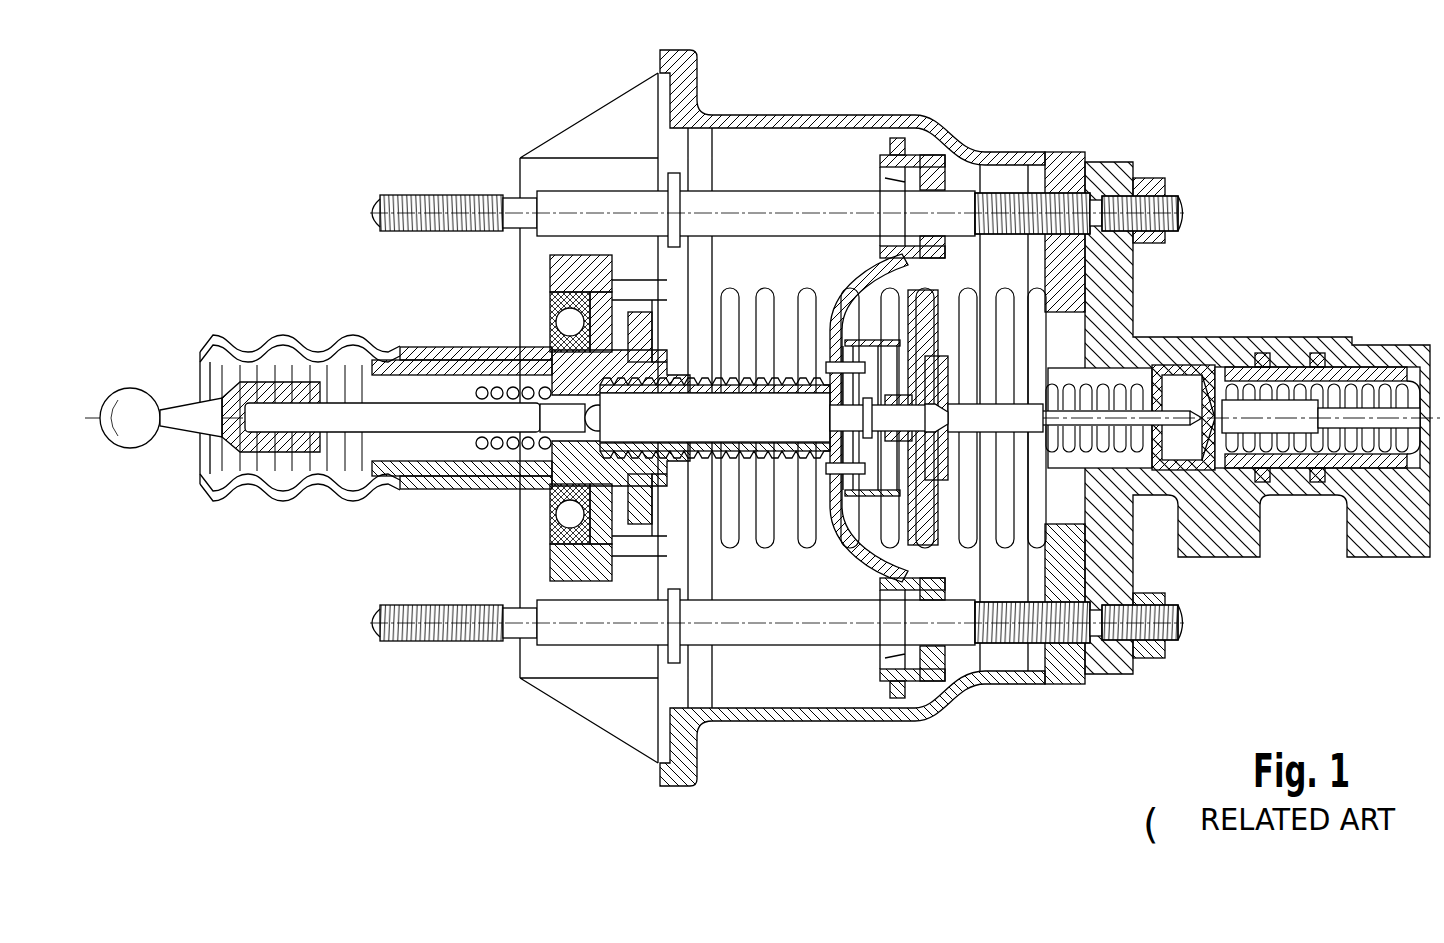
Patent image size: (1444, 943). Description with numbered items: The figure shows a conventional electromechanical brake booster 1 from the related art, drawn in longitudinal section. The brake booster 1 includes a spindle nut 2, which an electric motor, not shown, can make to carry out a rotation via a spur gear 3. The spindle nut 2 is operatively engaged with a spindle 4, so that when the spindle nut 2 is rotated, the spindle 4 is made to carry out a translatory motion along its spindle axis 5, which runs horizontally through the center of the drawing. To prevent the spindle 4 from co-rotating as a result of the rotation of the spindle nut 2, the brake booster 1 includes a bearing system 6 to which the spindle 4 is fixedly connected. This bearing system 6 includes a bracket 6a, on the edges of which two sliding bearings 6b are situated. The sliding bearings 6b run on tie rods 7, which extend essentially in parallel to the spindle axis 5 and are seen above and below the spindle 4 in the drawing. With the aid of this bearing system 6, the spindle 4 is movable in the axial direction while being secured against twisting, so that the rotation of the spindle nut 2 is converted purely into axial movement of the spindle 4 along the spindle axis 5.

The brake booster 1 is at (762, 395).
The spindle nut 2 is at (566, 372).
The spur gear 3 is at (560, 280).
The spindle 4 is at (745, 410).
The spindle axis 5 is at (410, 440).
The bearing system 6 is at (882, 152).
The bracket 6a is at (858, 290).
The sliding bearings 6b is at (924, 160).
The tie rods 7 is at (792, 210).